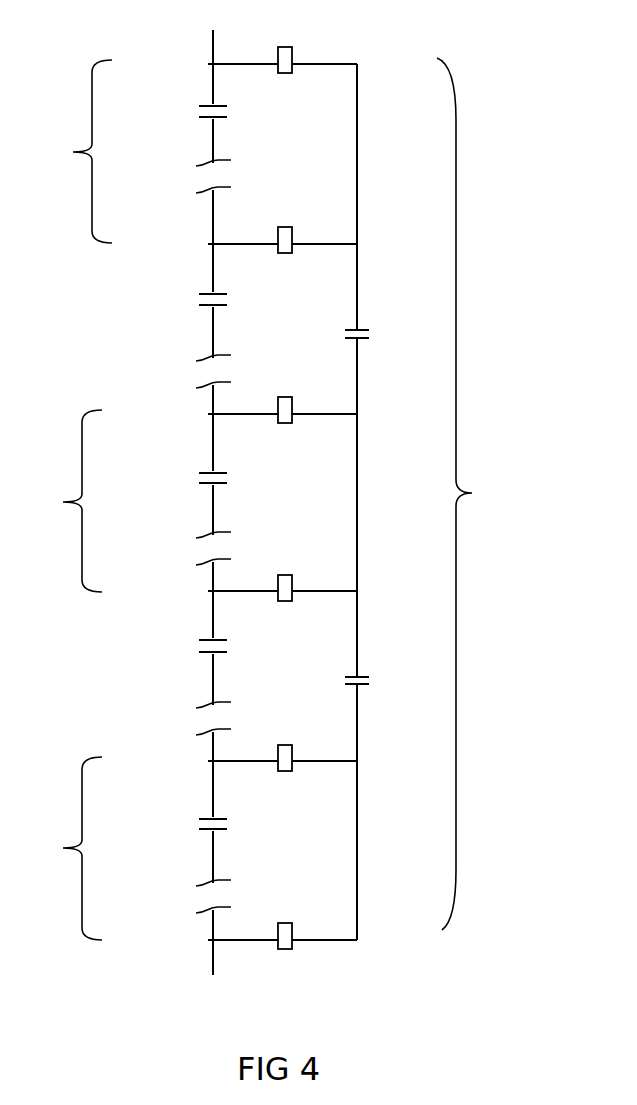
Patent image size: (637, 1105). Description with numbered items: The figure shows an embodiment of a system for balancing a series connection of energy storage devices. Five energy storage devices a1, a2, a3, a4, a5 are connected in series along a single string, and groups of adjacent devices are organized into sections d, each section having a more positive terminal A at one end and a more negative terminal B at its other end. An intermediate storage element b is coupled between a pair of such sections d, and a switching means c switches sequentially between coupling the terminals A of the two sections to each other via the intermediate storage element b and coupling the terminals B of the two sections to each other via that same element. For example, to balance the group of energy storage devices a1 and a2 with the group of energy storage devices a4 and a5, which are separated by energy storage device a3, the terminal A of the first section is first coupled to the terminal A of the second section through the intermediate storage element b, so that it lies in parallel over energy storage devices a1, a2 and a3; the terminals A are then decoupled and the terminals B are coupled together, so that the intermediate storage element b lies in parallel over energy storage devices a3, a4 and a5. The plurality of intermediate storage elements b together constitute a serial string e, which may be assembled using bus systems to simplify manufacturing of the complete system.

The more positive terminal A is at (212, 63).
The more negative terminal B is at (212, 243).
The energy storage device a1 is at (186, 112).
The energy storage device a2 is at (185, 302).
The energy storage device a3 is at (185, 477).
The energy storage device a4 is at (186, 650).
The energy storage device a5 is at (187, 825).
The intermediate storage element b is at (372, 330).
The switching means c is at (300, 45).
The section d is at (74, 500).
The serial string e is at (476, 494).